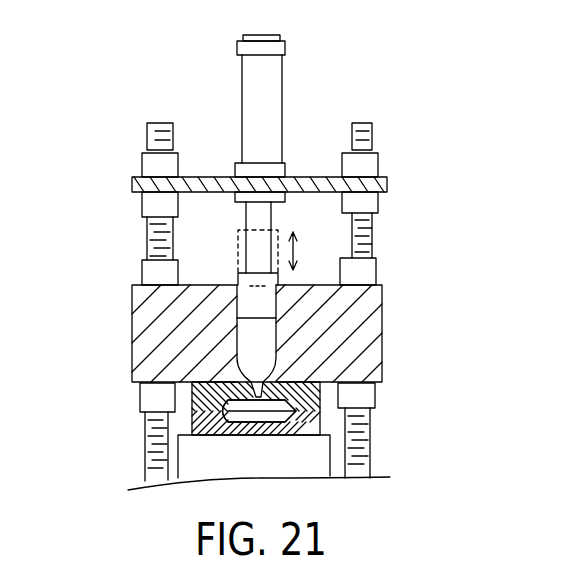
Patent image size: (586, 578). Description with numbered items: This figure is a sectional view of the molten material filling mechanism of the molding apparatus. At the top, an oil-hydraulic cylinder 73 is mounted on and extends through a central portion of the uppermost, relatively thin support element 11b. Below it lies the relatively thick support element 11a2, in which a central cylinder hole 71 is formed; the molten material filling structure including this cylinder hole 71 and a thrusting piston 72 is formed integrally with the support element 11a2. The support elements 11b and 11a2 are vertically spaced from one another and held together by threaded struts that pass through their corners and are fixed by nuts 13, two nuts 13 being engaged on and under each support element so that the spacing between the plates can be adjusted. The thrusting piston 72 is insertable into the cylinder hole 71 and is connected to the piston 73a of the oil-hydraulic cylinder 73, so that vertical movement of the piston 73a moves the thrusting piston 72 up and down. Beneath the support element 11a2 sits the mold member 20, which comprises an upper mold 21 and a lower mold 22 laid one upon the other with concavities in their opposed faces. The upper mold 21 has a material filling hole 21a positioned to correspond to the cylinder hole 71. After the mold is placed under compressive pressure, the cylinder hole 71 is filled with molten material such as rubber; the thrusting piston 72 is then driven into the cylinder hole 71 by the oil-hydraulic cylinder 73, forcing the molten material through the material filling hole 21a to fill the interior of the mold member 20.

The oil-hydraulic cylinder 73 is at (282, 97).
The piston 73a is at (272, 220).
The thrusting piston 72 is at (270, 302).
The cylinder hole 71 is at (270, 346).
The support element 11b is at (387, 187).
The support element 11a2 is at (383, 333).
The nut 13 is at (142, 165).
The mold member 20 is at (63, 380).
The upper mold 21 is at (193, 400).
The material filling hole 21a is at (250, 399).
The lower mold 22 is at (190, 428).